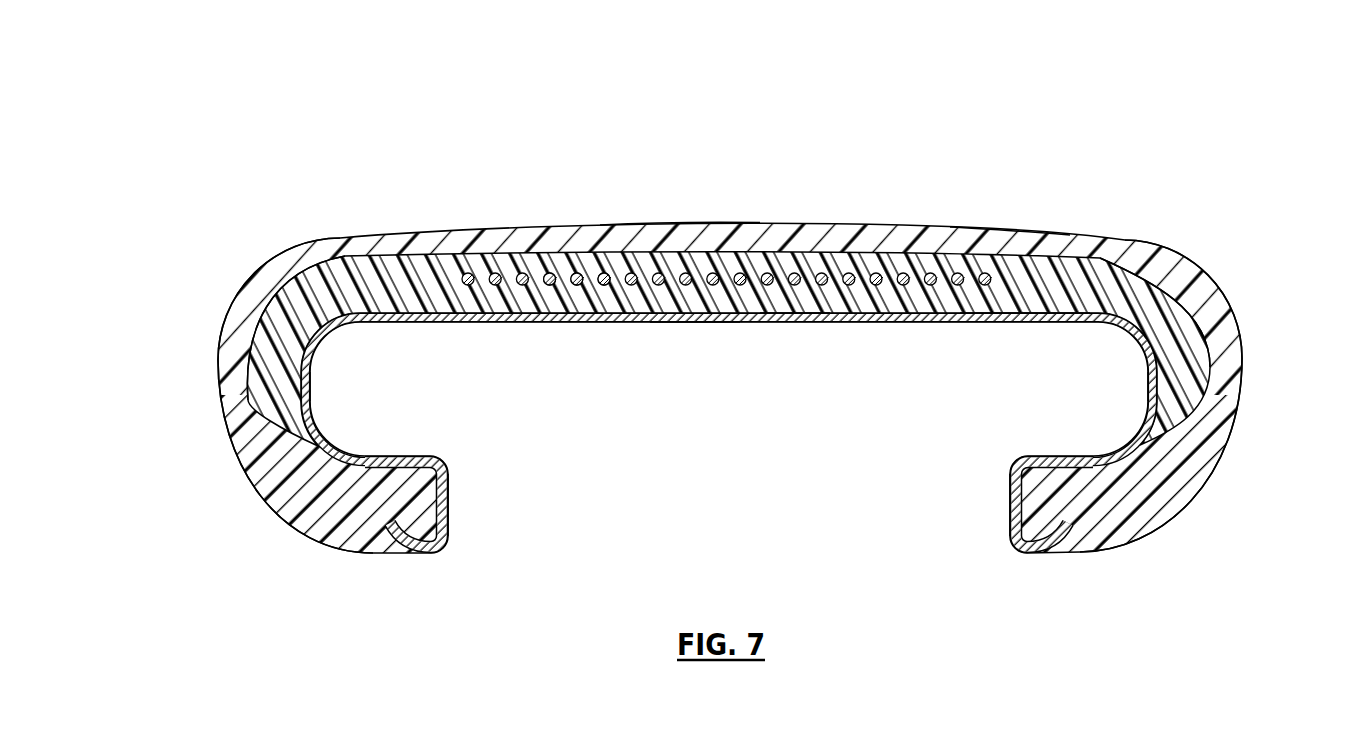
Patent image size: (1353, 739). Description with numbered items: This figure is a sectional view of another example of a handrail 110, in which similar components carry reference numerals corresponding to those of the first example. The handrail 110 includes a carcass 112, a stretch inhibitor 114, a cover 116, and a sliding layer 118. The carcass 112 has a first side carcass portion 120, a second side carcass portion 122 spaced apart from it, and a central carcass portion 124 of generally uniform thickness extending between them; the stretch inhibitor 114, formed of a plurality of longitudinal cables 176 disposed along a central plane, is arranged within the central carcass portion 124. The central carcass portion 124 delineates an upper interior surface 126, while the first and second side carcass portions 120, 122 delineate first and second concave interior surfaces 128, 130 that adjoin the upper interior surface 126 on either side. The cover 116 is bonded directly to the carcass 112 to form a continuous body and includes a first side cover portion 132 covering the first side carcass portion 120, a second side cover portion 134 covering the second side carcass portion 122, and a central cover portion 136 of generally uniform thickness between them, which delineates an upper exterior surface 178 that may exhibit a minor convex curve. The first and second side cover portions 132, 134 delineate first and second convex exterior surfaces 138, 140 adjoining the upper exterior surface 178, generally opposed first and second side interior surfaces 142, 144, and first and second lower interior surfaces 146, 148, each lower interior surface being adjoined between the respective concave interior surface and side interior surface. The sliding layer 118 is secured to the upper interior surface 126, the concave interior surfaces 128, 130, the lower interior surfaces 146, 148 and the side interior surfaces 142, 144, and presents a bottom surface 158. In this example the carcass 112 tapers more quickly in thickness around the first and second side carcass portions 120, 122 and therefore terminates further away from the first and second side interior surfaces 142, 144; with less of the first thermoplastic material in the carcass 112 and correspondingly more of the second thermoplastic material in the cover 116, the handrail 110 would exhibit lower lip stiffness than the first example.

The handrail 110 is at (730, 311).
The carcass 112 is at (868, 250).
The stretch inhibitor 114 is at (931, 262).
The cover 116 is at (1006, 227).
The sliding layer 118 is at (1041, 302).
The first side carcass portion 120 is at (282, 372).
The second side carcass portion 122 is at (1160, 355).
The central carcass portion 124 is at (787, 305).
The upper interior surface 126 is at (733, 324).
The first concave interior surface 128 is at (297, 385).
The second concave interior surface 130 is at (1150, 392).
The first side cover portion 132 is at (223, 412).
The second side cover portion 134 is at (1217, 317).
The central cover portion 136 is at (667, 240).
The first convex exterior surface 138 is at (215, 355).
The second convex exterior surface 140 is at (1242, 358).
The first side interior surface 142 is at (452, 487).
The second side interior surface 144 is at (1008, 510).
The first lower interior surface 146 is at (407, 455).
The second lower interior surface 148 is at (1047, 455).
The bottom surface 158 is at (690, 325).
The cables 176 is at (608, 257).
The upper exterior surface 178 is at (718, 224).